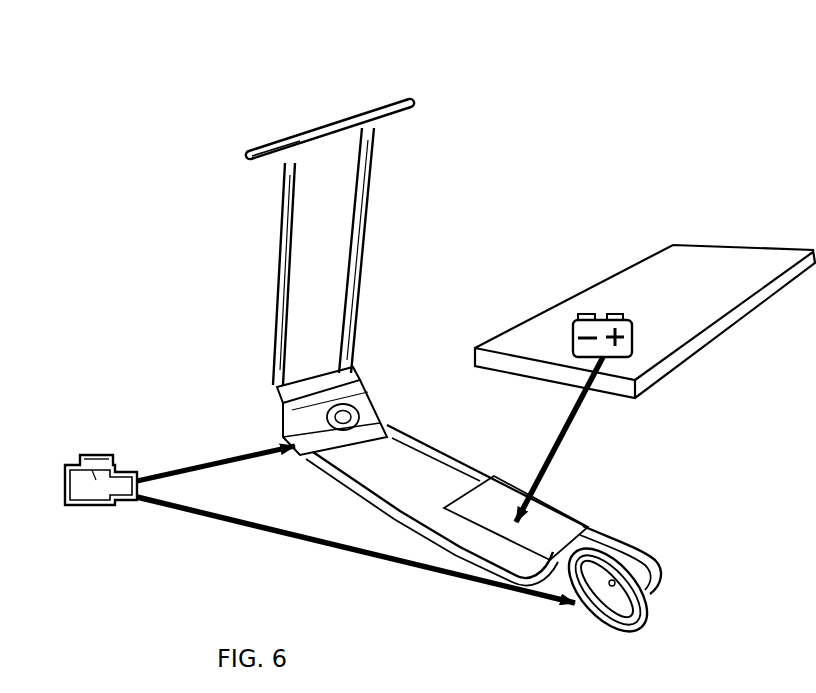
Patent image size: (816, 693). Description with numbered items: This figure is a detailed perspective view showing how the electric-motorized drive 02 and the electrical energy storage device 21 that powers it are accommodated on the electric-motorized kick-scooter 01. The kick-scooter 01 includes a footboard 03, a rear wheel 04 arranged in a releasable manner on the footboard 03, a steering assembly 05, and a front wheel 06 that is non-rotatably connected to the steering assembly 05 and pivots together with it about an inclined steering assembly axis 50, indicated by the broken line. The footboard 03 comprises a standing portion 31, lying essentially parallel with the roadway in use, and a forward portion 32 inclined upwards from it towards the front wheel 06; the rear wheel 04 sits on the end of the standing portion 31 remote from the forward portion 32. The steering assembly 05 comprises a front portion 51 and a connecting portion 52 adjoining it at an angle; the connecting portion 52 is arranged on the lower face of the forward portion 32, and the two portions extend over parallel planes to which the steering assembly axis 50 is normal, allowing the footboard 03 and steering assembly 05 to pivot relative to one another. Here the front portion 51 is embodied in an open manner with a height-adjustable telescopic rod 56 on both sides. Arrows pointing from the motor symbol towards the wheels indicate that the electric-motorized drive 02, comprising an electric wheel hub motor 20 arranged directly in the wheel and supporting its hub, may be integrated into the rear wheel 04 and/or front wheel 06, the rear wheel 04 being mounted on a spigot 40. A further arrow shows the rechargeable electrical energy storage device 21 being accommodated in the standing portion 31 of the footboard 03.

The kick-scooter 01 is at (111, 160).
The electric-motorized drive 02 is at (67, 463).
The footboard 03 is at (568, 497).
The rear wheel 04 is at (650, 597).
The steering assembly 05 is at (292, 125).
The front wheel 06 is at (292, 432).
The electric wheel hub motor 20 is at (303, 462).
The electrical energy storage device 21 is at (705, 253).
The standing portion 31 is at (400, 485).
The forward portion 32 is at (390, 420).
The spigot 40 is at (660, 575).
The steering assembly axis 50 is at (380, 392).
The front portion 51 is at (275, 302).
The connecting portion 52 is at (357, 362).
The telescopic rod 56 is at (363, 222).